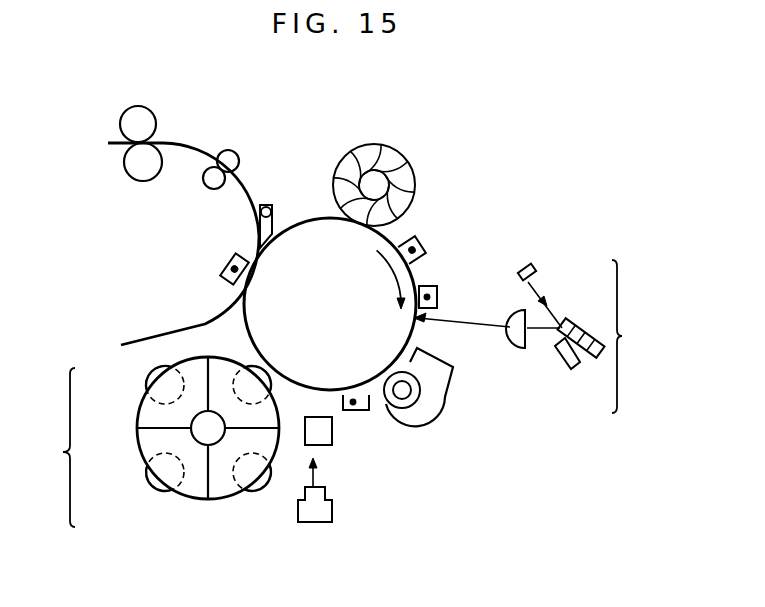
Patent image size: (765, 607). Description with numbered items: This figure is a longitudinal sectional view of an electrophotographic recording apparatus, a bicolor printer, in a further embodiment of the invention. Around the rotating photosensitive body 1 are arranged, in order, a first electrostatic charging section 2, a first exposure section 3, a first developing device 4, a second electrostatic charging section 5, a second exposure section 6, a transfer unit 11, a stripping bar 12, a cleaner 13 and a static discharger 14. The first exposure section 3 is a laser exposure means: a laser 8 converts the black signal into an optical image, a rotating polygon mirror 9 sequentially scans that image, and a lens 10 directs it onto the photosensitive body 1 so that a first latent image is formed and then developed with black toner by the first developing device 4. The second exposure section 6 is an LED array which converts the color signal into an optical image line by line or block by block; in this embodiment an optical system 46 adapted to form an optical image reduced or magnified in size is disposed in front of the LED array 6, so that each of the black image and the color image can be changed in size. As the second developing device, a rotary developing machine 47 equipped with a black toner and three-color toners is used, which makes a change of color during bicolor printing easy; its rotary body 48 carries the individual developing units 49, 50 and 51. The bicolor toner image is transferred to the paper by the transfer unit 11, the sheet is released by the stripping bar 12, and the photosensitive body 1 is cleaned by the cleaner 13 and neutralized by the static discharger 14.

The photosensitive body 1 is at (303, 217).
The first electrostatic charging section 2 is at (439, 298).
The first exposure section 3 is at (645, 356).
The first developing device 4 is at (445, 397).
The second electrostatic charging section 5 is at (362, 411).
The second exposure section 6 is at (333, 511).
The laser 8 is at (525, 262).
The rotating polygon mirror 9 is at (578, 370).
The lens 10 is at (520, 350).
The transfer unit 11 is at (223, 258).
The stripping bar 12 is at (266, 205).
The cleaner 13 is at (412, 165).
The static discharger 14 is at (420, 238).
The optical system 46 is at (333, 432).
The rotary developing machine 47 is at (51, 470).
The rotary holder 48 is at (225, 357).
The developing device 49 is at (138, 412).
The developing device 50 is at (138, 445).
The developing device 51 is at (226, 498).